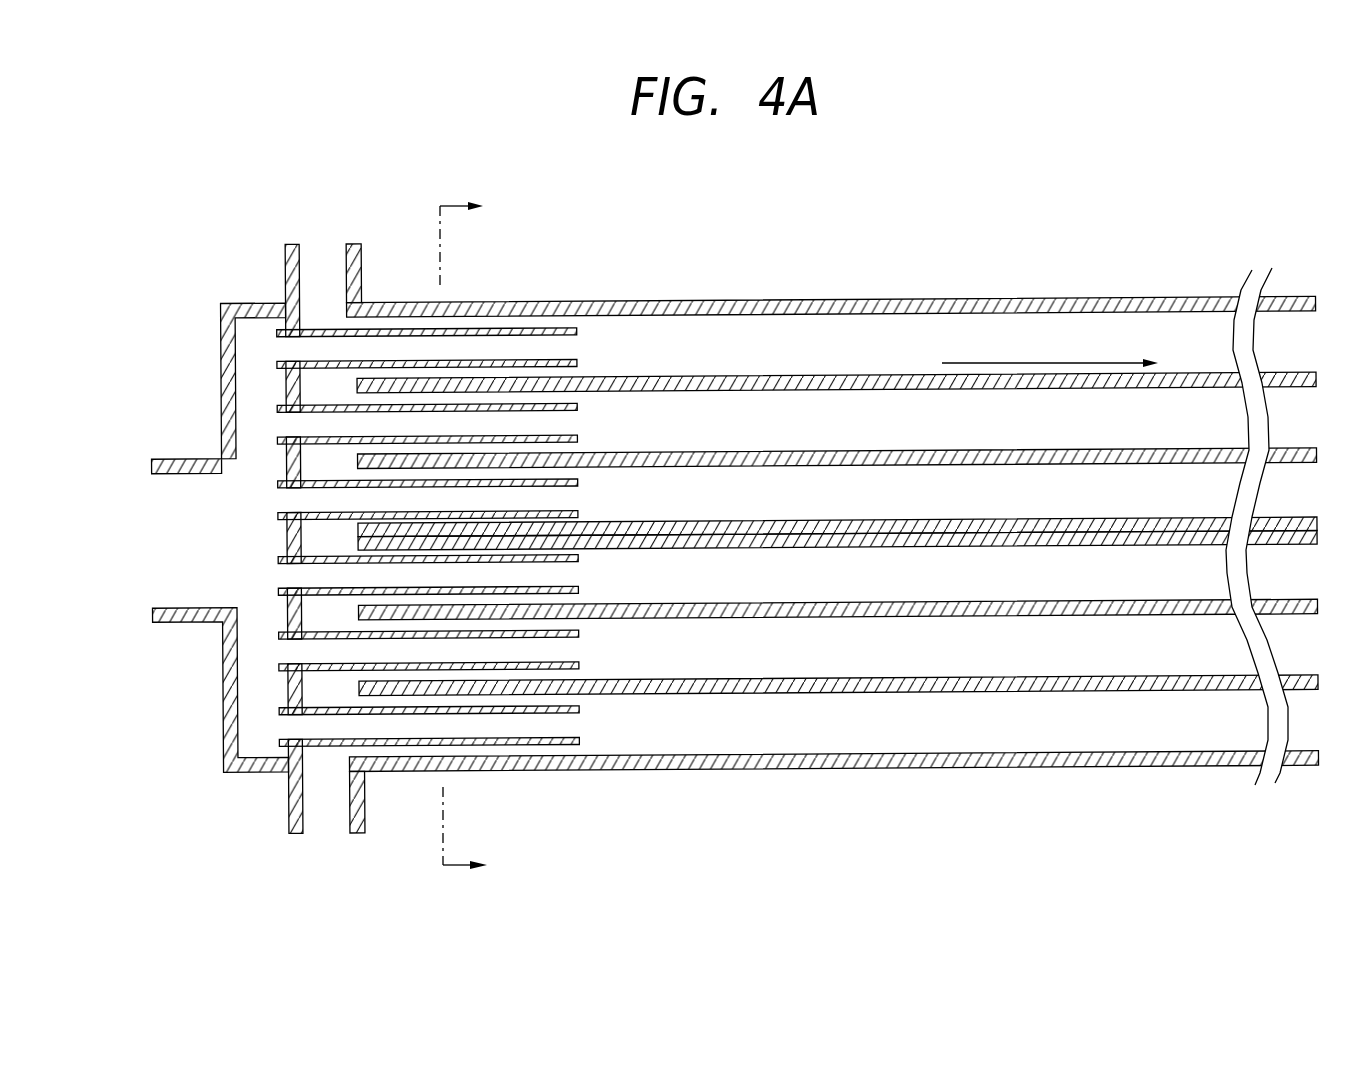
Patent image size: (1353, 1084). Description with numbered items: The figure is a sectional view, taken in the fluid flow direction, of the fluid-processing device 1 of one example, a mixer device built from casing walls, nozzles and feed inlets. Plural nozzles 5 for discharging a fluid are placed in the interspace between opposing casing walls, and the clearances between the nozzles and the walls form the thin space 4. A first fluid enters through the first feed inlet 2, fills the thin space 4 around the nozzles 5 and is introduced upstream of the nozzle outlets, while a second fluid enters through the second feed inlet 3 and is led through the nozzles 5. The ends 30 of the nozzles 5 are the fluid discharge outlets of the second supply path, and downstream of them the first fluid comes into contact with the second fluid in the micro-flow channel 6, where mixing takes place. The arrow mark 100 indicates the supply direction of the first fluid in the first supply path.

The fluid-processing device 1 is at (1124, 221).
The first feed inlet 2 is at (330, 248).
The second feed inlet 3 is at (171, 543).
The thin space 4 is at (833, 542).
The nozzle 5 is at (467, 593).
The micro-flow channel 6 is at (930, 642).
The end of nozzle 30 is at (575, 722).
The arrow mark 100 is at (1052, 357).